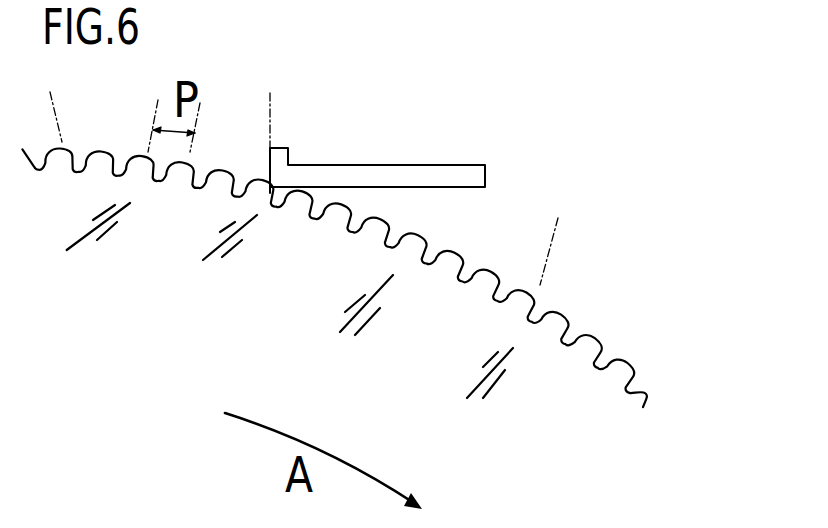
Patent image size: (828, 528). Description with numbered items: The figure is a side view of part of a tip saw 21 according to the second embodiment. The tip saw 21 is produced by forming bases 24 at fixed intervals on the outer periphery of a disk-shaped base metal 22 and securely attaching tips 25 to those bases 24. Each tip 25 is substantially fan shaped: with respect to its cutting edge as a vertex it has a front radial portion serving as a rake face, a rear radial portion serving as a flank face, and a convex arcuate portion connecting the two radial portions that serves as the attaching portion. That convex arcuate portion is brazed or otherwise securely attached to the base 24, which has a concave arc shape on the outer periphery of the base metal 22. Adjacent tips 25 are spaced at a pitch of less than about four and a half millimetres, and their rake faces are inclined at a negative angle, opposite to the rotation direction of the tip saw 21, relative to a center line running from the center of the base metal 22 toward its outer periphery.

The tip saw 21 is at (572, 315).
The base metal 22 is at (565, 380).
The base 24 is at (335, 212).
The tip 25 is at (455, 258).